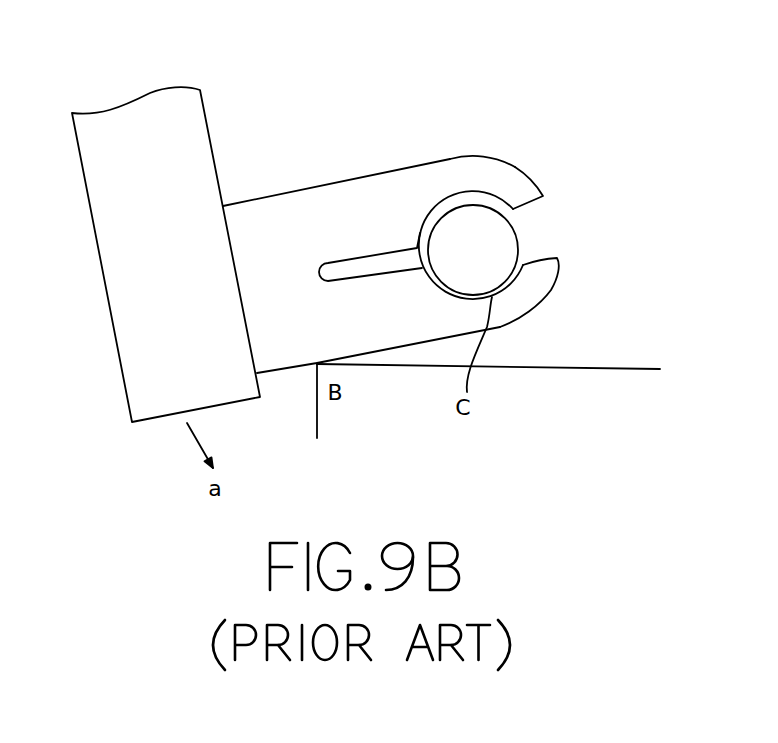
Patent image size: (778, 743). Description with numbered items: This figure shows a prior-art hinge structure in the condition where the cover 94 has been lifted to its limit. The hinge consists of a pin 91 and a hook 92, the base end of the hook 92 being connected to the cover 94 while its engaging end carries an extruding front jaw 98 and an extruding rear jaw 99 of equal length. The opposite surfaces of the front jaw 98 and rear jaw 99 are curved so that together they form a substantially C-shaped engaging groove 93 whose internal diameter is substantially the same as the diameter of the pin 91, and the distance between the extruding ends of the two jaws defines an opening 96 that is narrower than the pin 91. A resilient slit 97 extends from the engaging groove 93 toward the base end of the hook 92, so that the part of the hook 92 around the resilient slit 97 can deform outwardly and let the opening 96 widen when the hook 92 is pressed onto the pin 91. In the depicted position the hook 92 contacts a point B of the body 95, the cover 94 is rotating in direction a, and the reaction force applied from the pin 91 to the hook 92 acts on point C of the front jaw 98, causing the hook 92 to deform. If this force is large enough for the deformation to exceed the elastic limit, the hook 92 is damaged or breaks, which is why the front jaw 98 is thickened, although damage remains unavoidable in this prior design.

The pin 91 is at (477, 227).
The hook 92 is at (258, 223).
The engaging groove 93 is at (421, 234).
The cover 94 is at (118, 135).
The body 95 is at (530, 380).
The opening 96 is at (540, 215).
The resilient slit 97 is at (350, 275).
The front jaw 98 is at (533, 287).
The rear jaw 99 is at (443, 177).